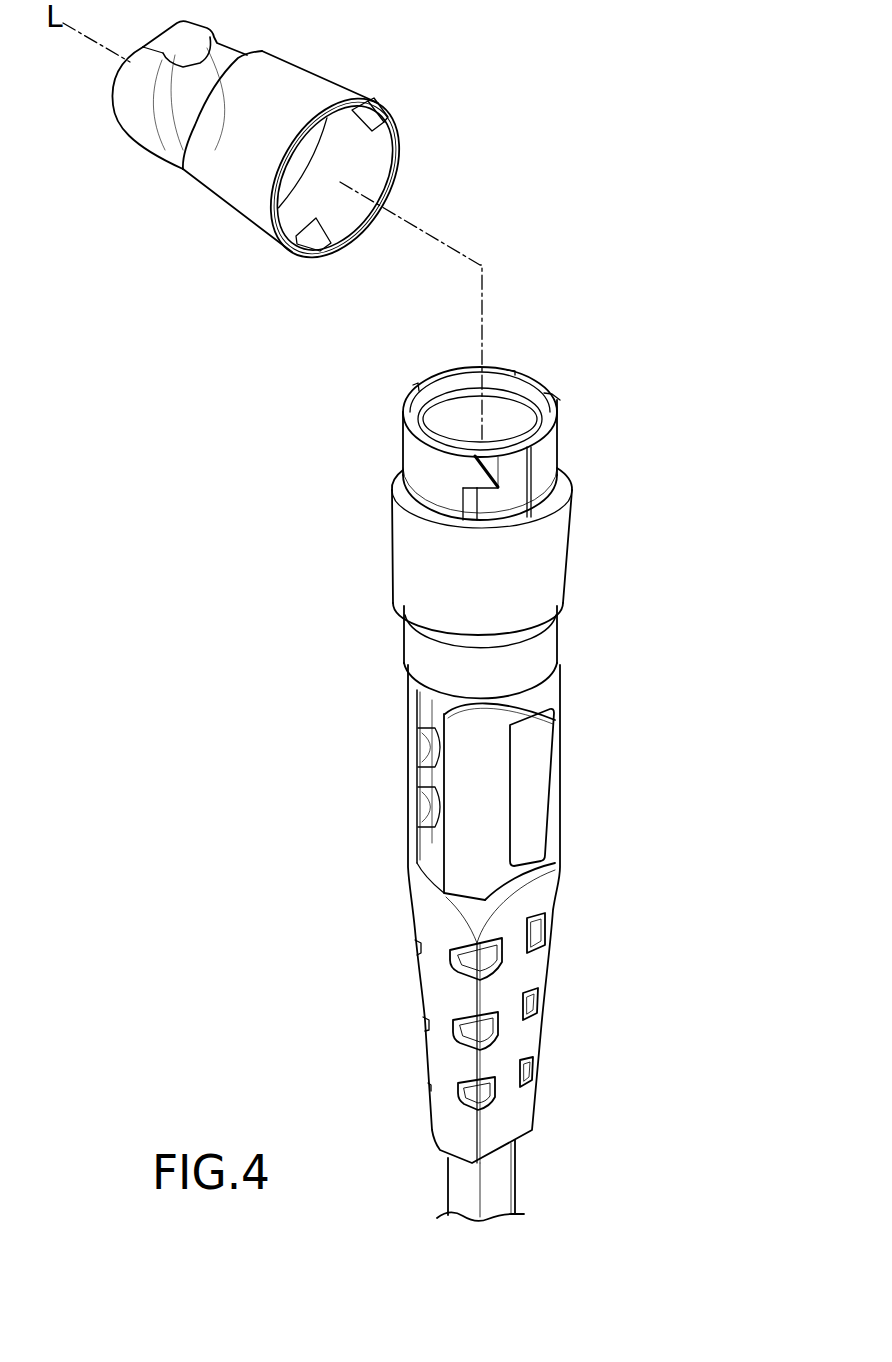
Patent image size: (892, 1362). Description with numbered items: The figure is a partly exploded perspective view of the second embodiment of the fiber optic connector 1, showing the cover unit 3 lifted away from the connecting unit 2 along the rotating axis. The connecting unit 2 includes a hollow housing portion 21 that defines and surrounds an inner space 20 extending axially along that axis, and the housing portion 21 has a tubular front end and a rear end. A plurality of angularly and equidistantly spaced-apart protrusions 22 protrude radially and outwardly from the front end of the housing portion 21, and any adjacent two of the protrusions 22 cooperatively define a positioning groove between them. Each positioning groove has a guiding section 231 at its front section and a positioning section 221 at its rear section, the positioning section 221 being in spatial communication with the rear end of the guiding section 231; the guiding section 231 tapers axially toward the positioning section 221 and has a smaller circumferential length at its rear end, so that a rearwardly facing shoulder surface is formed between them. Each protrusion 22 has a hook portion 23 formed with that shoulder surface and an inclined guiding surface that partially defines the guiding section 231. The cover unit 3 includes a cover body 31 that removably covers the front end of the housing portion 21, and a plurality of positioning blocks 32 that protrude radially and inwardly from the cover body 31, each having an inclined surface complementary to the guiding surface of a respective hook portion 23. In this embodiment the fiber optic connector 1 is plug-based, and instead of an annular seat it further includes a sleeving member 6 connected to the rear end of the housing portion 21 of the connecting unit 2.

The fiber optic connector 1 is at (590, 262).
The connecting unit 2 is at (600, 534).
The cover unit 3 is at (390, 82).
The sleeving member 6 is at (423, 912).
The inner space 20 is at (508, 408).
The housing portion 21 is at (562, 580).
The protrusions 22 is at (447, 370).
The hook portion 23 is at (455, 472).
The cover body 31 is at (217, 195).
The positioning blocks 32 is at (383, 130).
The positioning section 221 is at (475, 528).
The guiding section 231 is at (542, 462).